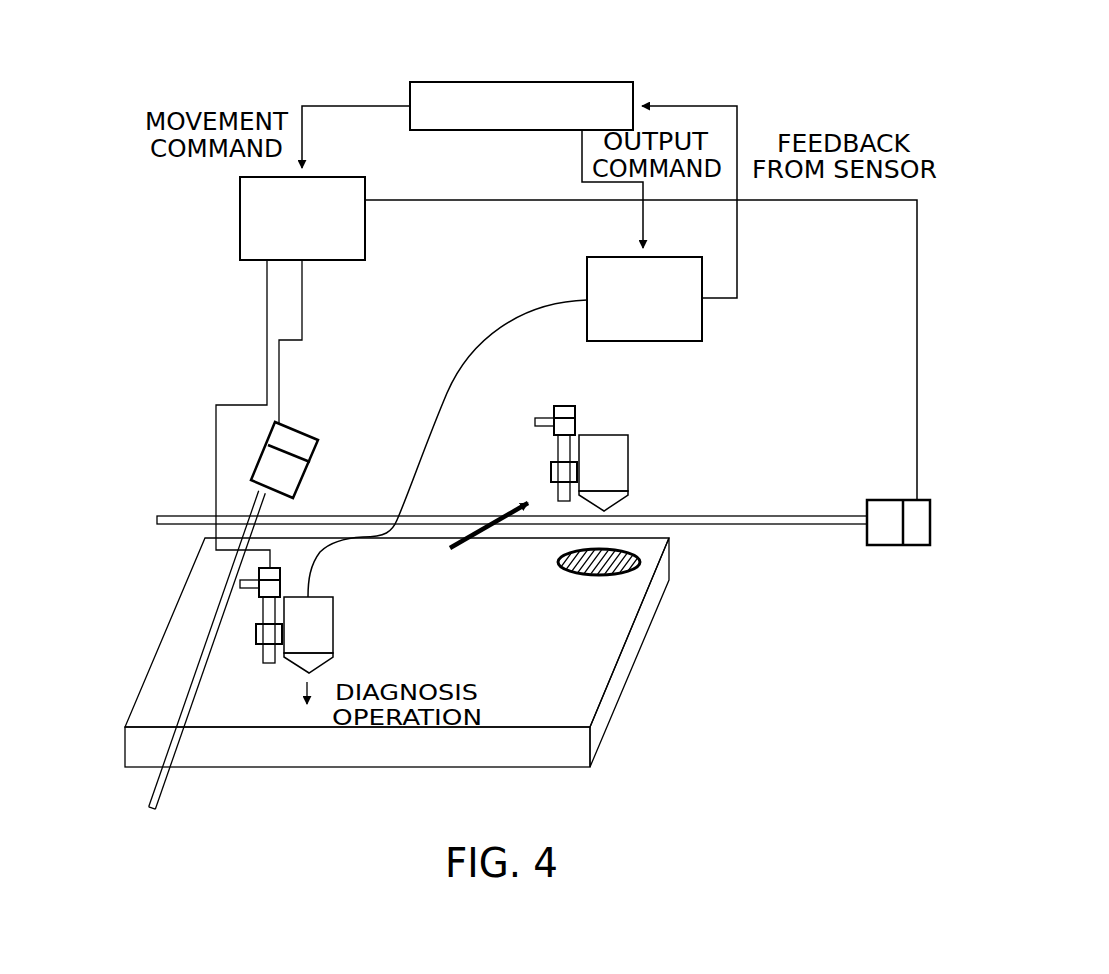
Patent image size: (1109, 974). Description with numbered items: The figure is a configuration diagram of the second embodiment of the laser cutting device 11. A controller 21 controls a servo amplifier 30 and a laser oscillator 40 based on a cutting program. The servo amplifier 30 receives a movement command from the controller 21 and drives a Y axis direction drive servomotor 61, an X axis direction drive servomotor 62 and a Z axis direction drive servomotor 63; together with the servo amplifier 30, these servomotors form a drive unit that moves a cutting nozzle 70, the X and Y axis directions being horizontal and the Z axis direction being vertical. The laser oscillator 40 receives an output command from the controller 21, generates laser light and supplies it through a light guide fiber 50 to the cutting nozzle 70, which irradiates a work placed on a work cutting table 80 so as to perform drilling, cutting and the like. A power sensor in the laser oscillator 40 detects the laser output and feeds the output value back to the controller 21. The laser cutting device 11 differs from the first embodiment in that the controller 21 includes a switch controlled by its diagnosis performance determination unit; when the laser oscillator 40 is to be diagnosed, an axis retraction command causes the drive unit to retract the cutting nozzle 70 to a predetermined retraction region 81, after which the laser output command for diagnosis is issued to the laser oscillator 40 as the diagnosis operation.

The laser cutting device 11 is at (158, 295).
The controller 21 is at (535, 81).
The servo amplifier 30 is at (333, 260).
The laser oscillator 40 is at (670, 342).
The light guide fiber 50 is at (447, 393).
The Y axis direction drive servomotor 61 is at (307, 422).
The X axis direction drive servomotor 62 is at (930, 515).
The Z axis direction drive servomotor 63 is at (240, 582).
The cutting nozzle 70 is at (333, 630).
The work cutting table 80 is at (597, 735).
The retraction region 81 is at (640, 560).